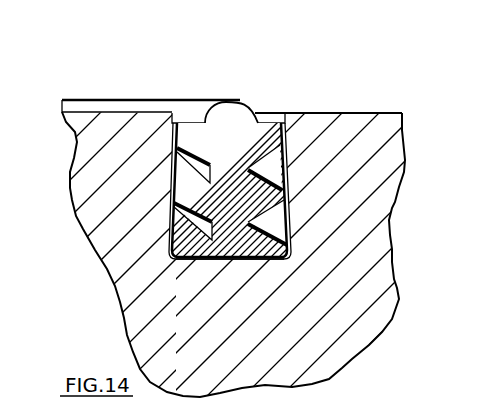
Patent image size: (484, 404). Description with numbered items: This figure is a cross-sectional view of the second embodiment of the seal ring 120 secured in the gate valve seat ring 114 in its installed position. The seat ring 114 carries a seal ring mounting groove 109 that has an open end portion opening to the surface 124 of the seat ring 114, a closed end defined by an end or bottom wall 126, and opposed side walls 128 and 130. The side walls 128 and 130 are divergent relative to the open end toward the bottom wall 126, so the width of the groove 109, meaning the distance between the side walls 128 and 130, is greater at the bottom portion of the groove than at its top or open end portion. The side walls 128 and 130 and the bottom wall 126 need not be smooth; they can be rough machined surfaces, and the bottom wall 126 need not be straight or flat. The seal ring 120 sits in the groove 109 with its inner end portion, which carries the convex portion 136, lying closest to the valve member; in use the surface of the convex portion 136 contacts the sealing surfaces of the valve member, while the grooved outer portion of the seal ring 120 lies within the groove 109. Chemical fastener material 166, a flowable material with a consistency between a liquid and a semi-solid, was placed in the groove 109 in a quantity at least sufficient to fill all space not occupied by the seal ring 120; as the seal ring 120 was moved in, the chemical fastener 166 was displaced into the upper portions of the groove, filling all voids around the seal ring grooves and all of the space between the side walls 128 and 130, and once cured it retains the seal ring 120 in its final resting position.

The seal ring mounting groove 109 is at (287, 259).
The seat ring 114 is at (168, 337).
The seal ring 120 is at (252, 202).
The surface 124 is at (292, 113).
The bottom wall 126 is at (198, 265).
The side wall 128 is at (170, 155).
The side wall 130 is at (291, 254).
The convex portion 136 is at (110, 100).
The chemical fastener 166 is at (168, 200).